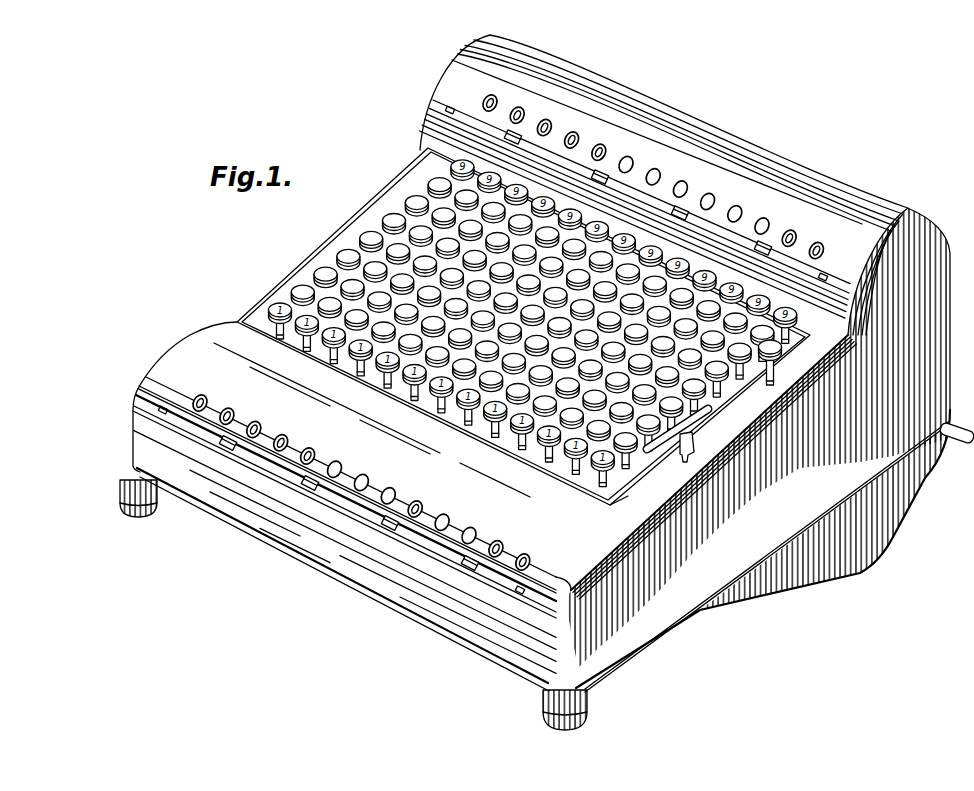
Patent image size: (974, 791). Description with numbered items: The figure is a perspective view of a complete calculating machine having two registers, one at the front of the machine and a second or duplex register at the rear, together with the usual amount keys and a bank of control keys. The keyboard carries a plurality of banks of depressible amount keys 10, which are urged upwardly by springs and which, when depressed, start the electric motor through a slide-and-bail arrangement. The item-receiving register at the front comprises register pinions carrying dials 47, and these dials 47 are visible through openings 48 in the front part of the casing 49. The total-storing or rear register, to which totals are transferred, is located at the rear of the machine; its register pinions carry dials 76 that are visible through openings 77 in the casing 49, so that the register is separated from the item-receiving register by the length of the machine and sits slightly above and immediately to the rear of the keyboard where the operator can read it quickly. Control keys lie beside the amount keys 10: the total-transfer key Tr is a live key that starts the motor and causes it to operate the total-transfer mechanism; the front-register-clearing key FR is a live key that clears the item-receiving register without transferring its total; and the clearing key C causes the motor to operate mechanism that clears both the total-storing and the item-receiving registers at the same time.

The casing 49 is at (463, 72).
The openings 77 is at (600, 146).
The dials 76 is at (735, 206).
The depressible amount keys 10 is at (325, 270).
The openings 48 is at (344, 476).
The dials 47 is at (494, 540).
The clearing key C is at (761, 353).
The front-register-clearing key FR is at (685, 435).
The total-transfer key Tr is at (639, 485).